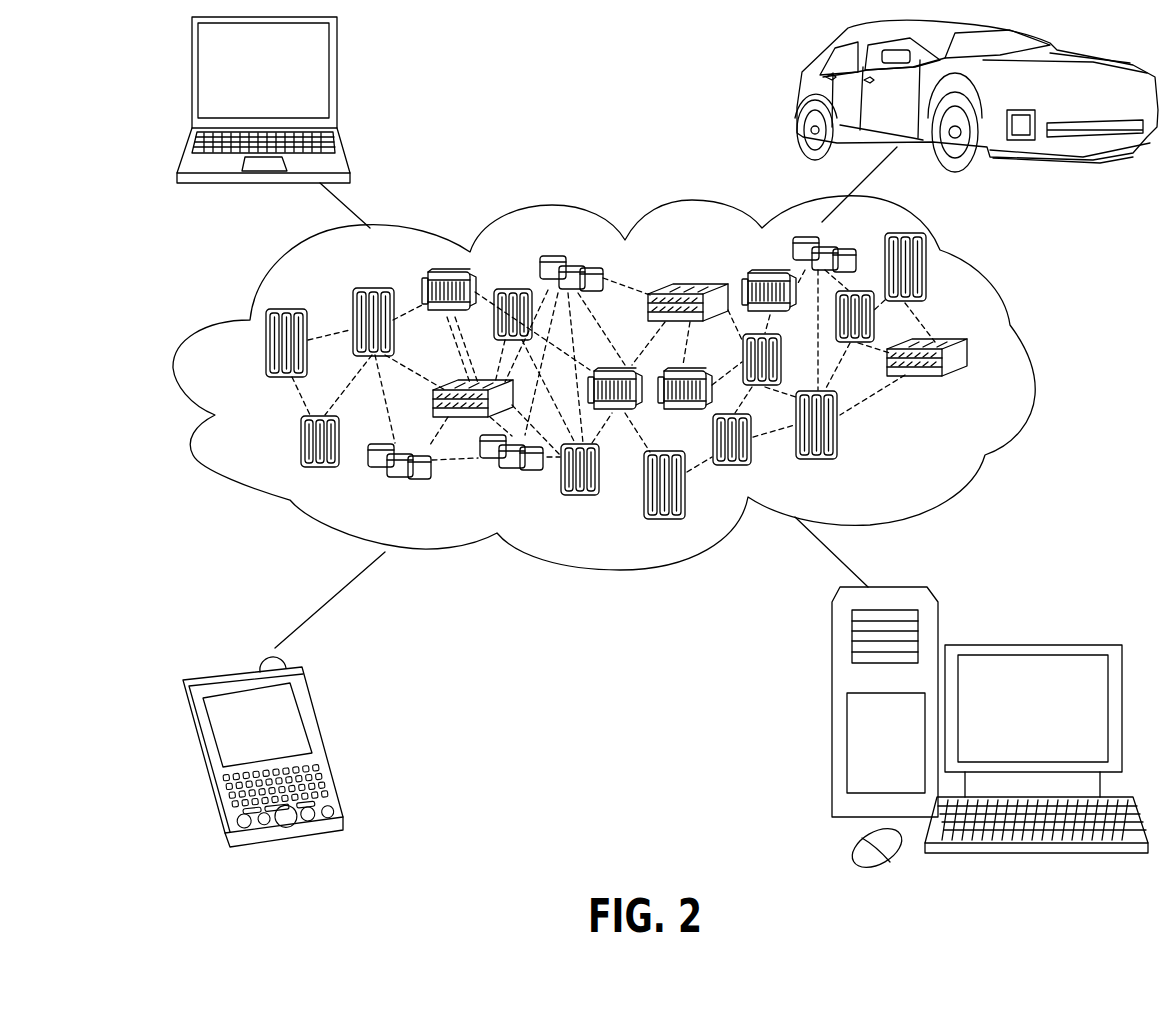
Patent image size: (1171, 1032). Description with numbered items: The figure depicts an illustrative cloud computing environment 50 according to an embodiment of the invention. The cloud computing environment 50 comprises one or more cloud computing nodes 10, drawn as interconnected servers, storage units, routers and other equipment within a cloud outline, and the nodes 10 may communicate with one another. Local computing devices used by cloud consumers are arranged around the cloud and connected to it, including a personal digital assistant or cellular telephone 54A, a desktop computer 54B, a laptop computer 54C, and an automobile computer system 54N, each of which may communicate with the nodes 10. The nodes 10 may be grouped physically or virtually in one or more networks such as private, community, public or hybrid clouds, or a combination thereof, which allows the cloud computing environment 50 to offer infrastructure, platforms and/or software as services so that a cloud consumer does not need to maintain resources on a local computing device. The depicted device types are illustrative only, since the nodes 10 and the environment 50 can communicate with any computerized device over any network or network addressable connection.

The cloud computing node 10 is at (968, 382).
The cloud computing environment 50 is at (1032, 357).
The personal digital assistant (PDA) or cellular telephone 54A is at (328, 739).
The desktop computer 54B is at (1030, 645).
The laptop computer 54C is at (337, 80).
The automobile computer system 54N is at (800, 102).